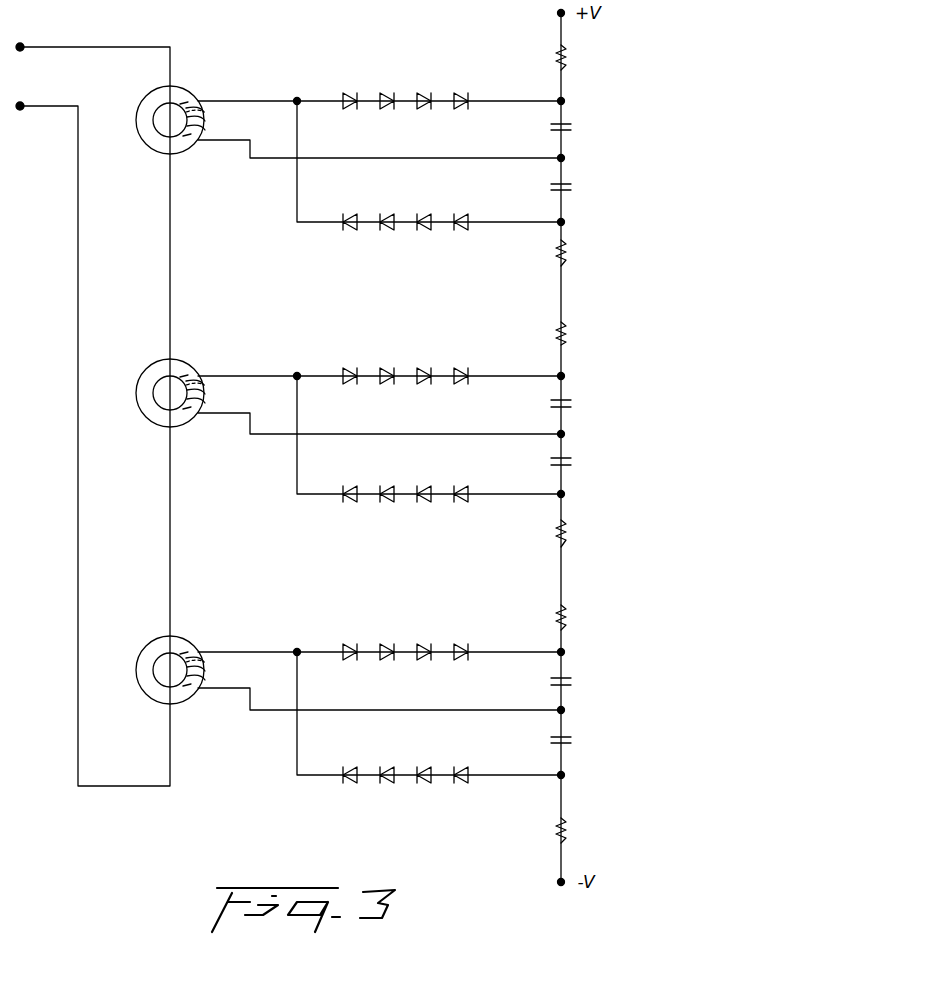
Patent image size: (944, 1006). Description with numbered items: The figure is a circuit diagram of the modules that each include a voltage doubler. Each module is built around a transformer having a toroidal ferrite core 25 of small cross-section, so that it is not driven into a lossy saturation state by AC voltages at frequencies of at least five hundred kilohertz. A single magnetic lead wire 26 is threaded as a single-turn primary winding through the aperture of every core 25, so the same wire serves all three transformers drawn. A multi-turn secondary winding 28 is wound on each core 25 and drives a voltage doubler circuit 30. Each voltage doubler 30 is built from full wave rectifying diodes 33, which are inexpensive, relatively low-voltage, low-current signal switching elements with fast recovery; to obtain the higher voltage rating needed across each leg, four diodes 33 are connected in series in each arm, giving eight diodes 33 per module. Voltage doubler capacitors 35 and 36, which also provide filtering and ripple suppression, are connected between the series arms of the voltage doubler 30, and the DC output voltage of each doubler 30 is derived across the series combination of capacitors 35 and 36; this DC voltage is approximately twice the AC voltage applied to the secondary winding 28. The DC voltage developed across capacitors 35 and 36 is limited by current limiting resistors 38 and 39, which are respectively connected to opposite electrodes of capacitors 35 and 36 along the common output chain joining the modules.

The toroidal ferrite core 25 is at (180, 92).
The single magnetic lead wire 26 is at (113, 50).
The multi-turn secondary winding 28 is at (203, 128).
The voltage doubler circuit 30 is at (391, 145).
The full wave rectifying diodes 33 is at (405, 438).
The voltage doubler capacitor 35 is at (578, 128).
The voltage doubler capacitor 36 is at (578, 188).
The current limiting resistor 38 is at (570, 60).
The current limiting resistor 39 is at (572, 253).